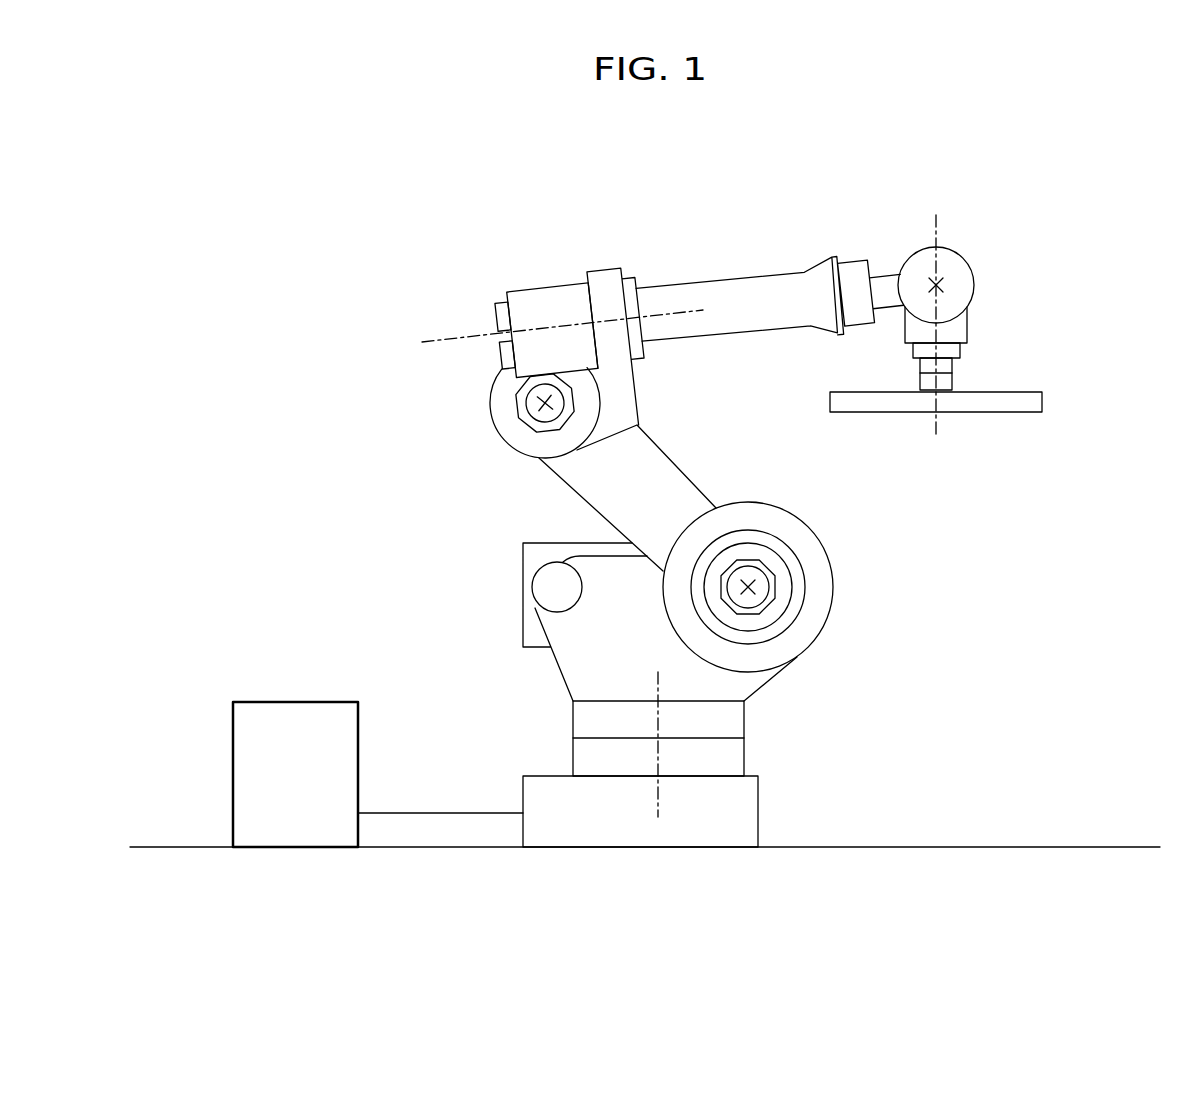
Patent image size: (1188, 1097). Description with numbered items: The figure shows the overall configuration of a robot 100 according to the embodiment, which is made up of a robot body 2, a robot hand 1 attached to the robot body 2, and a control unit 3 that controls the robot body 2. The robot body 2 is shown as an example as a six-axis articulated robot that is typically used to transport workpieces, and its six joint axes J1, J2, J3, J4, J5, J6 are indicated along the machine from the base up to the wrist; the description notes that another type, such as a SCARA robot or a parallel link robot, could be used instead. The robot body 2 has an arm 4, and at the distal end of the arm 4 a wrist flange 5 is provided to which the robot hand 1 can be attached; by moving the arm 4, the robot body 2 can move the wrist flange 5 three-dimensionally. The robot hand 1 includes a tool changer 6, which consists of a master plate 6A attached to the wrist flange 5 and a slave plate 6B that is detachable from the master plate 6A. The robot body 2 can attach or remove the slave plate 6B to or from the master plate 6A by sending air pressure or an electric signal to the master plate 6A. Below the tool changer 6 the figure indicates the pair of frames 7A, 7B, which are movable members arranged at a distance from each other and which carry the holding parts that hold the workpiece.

The robot 100 is at (329, 287).
The robot hand 1 is at (1097, 295).
The robot body 2 is at (494, 261).
The control unit 3 is at (292, 702).
The arm 4 is at (722, 286).
The wrist flange 5 is at (913, 345).
The tool changer 6 is at (1053, 313).
The master plate 6A is at (958, 364).
The slave plate 6B is at (957, 384).
The frame 7A is at (1042, 400).
The frame 7B is at (936, 402).
The joint axis J1 is at (658, 724).
The joint axis J2 is at (752, 588).
The joint axis J3 is at (540, 404).
The joint axis J4 is at (547, 353).
The joint axis J5 is at (940, 285).
The joint axis J6 is at (934, 307).